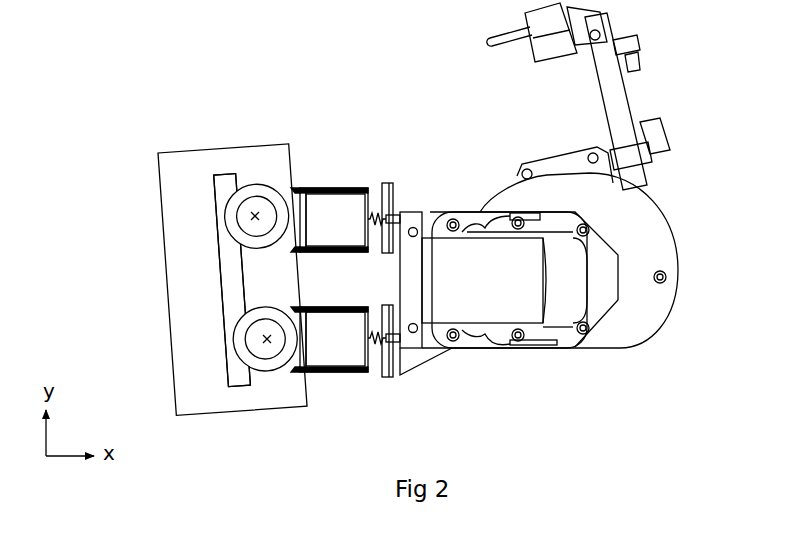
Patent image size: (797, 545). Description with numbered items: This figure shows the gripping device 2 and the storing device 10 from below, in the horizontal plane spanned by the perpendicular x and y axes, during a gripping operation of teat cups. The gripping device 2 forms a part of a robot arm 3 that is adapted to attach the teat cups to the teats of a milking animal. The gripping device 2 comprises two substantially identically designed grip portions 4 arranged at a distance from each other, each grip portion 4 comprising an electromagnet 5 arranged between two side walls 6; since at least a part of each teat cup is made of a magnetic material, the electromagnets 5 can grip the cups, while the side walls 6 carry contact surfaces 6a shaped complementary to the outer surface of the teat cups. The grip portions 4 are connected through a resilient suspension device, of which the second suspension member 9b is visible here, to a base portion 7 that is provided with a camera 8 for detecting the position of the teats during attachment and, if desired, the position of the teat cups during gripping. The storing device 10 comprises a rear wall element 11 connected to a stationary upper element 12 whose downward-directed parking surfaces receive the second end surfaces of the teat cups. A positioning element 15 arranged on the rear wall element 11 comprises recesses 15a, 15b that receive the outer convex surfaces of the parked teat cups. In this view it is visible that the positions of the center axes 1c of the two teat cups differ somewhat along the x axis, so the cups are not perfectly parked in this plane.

The gripping device 2 is at (662, 362).
The robot arm 3 is at (615, 102).
The grip portion 4 is at (358, 187).
The electromagnet 5 is at (335, 227).
The side wall 6 is at (318, 188).
The contact surface 6a is at (295, 178).
The base portion 7 is at (467, 218).
The camera 8 is at (507, 302).
The second suspension member 9b is at (382, 328).
The storing device 10 is at (160, 140).
The rear wall element 11 is at (213, 175).
The upper element 12 is at (263, 163).
The positioning element 15 is at (233, 277).
The recess 15a is at (219, 218).
The recess 15b is at (235, 350).
The center axis 1c is at (252, 215).